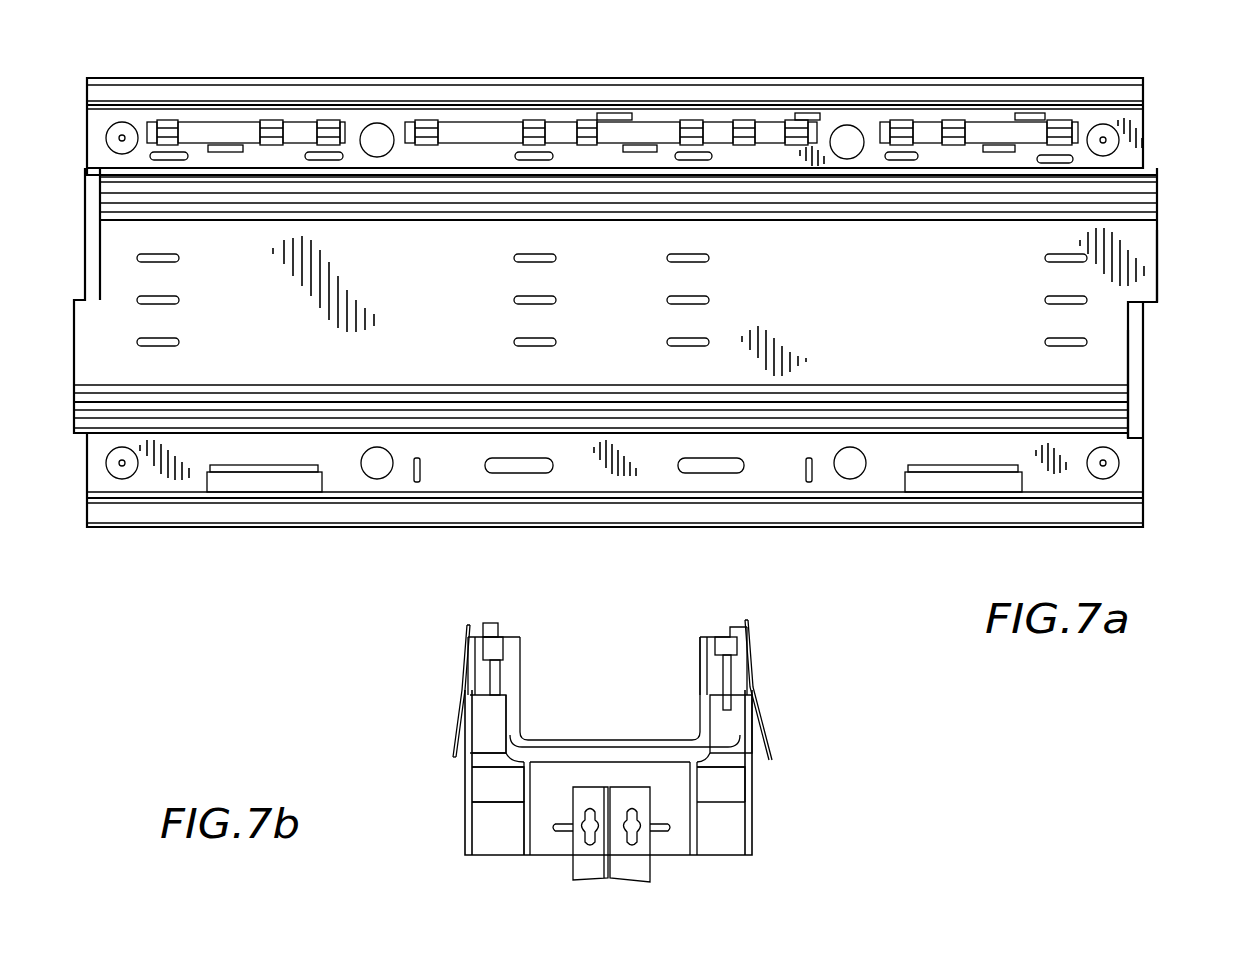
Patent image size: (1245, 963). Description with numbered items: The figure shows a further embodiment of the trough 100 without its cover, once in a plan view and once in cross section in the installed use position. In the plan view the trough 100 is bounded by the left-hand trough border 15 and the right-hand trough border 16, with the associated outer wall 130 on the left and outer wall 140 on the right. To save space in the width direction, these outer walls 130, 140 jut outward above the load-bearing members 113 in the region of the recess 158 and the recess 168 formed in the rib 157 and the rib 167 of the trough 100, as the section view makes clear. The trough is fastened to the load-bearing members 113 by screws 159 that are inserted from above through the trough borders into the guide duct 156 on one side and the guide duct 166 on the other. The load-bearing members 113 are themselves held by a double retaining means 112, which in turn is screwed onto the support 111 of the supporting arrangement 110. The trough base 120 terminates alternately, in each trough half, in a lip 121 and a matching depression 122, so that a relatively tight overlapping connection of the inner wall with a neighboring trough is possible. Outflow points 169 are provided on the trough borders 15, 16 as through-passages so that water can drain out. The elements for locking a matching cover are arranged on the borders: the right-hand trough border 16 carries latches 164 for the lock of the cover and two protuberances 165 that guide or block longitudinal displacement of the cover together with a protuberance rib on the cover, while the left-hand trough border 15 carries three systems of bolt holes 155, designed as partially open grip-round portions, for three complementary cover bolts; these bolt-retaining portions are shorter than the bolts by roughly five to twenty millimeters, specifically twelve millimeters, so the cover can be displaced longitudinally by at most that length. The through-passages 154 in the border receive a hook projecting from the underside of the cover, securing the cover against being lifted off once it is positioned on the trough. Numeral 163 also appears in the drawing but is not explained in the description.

In FIG. 7a, the trough 100 is at (1160, 500).
In FIG. 7b, the supporting arrangement 110 is at (735, 860).
In FIG. 7b, the support 111 is at (640, 875).
In FIG. 7b, the double retaining means 112 is at (740, 828).
In FIG. 7b, the load-bearing members 113 is at (490, 740).
In FIG. 7a, the trough base 120 is at (907, 368).
In FIG. 7b, the trough base 120 is at (680, 740).
In FIG. 7a, the lip 121 is at (1156, 236).
In FIG. 7a, the depression 122 is at (1136, 378).
In FIG. 7a, the outer wall 130 is at (982, 64).
In FIG. 7b, the outer wall 130 is at (478, 673).
In FIG. 7a, the outer wall 140 is at (893, 510).
In FIG. 7b, the outer wall 140 is at (755, 682).
In FIG. 7a, the trough border 15 is at (358, 125).
In FIG. 7a, the trough border 16 is at (188, 465).
In FIG. 7a, the through-passages 154 is at (640, 148).
In FIG. 7a, the bolt holes 155 is at (323, 120).
In FIG. 7b, the bolt holes 155 is at (498, 625).
In FIG. 7a, the guide duct 156 is at (148, 58).
In FIG. 7b, the guide duct 156 is at (467, 650).
In FIG. 7b, the rib 157 is at (463, 680).
In FIG. 7b, the recess 158 is at (450, 762).
In FIG. 7b, the screws 159 is at (457, 705).
In FIG. 7a, the slot 163 is at (1000, 145).
In FIG. 7a, the latches 164 is at (305, 485).
In FIG. 7a, the protuberances 165 is at (420, 480).
In FIG. 7a, the guide duct 166 is at (122, 480).
In FIG. 7b, the guide duct 166 is at (750, 630).
In FIG. 7b, the rib 167 is at (735, 670).
In FIG. 7b, the recess 168 is at (770, 713).
In FIG. 7a, the outflow points 169 is at (720, 473).